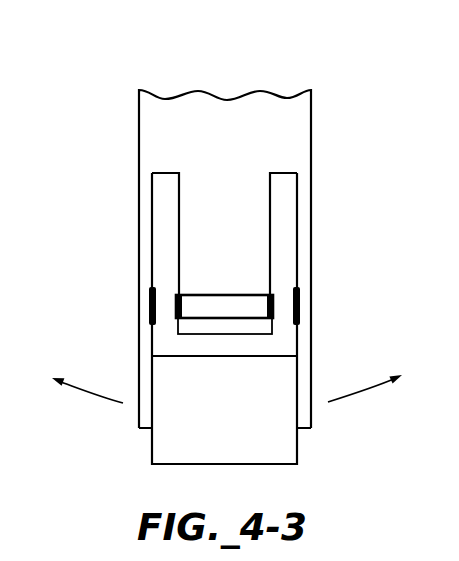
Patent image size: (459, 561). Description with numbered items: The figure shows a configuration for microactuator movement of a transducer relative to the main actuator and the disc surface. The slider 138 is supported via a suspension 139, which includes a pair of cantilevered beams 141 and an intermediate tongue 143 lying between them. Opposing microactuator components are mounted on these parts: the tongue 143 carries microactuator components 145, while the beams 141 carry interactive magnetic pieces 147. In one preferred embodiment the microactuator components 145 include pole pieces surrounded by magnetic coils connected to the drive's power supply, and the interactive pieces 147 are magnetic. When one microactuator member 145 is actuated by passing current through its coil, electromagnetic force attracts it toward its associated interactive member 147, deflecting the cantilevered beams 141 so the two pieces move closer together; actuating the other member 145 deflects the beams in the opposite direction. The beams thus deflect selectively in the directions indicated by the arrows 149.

The slider 138 is at (287, 447).
The suspension 139 is at (304, 125).
The cantilevered beams 141 is at (140, 207).
The intermediate tongue 143 is at (237, 207).
The microactuator components 145 is at (176, 296).
The interactive magnetic pieces 147 is at (149, 298).
The arrows 149 is at (112, 402).